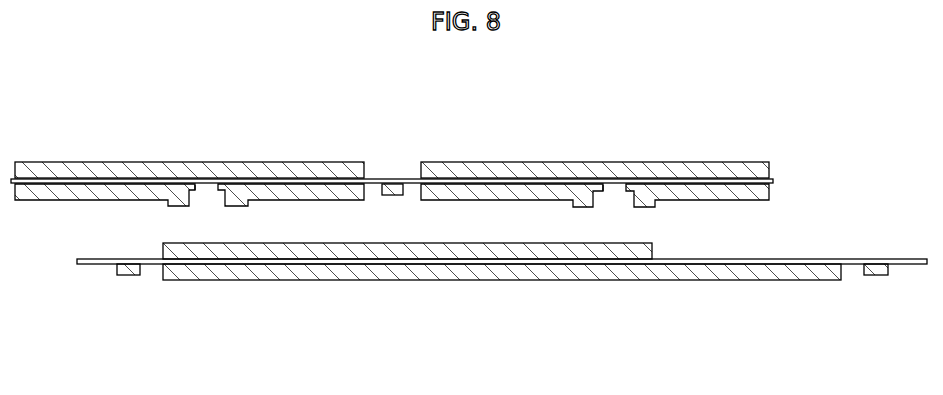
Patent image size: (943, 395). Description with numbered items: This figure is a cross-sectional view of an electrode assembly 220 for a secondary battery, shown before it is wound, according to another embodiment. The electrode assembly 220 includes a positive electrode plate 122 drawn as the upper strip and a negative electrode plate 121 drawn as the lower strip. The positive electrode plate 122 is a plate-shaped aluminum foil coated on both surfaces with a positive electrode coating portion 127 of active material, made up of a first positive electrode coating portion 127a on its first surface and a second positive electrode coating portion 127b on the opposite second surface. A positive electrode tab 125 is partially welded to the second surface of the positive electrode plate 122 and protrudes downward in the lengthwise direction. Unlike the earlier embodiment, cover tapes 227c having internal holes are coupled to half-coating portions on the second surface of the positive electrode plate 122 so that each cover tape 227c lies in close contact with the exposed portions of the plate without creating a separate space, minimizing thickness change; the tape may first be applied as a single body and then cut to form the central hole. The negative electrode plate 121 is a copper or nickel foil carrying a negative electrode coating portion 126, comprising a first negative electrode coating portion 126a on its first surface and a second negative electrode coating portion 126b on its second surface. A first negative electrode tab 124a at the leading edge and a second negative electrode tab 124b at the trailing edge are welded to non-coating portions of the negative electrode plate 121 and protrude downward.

The electrode assembly 220 is at (866, 136).
The positive electrode plate 122 is at (67, 178).
The positive electrode coating portion 127 is at (392, 187).
The first positive electrode coating portion 127a is at (248, 305).
The second positive electrode coating portion 127b is at (326, 195).
The cover tape 227c is at (208, 305).
The positive electrode tab 125 is at (392, 184).
The negative electrode plate 121 is at (90, 265).
The negative electrode coating portion 126 is at (502, 309).
The first negative electrode coating portion 126a is at (563, 262).
The second negative electrode coating portion 126b is at (495, 281).
The first negative electrode tab 124a is at (130, 277).
The second negative electrode tab 124b is at (875, 277).